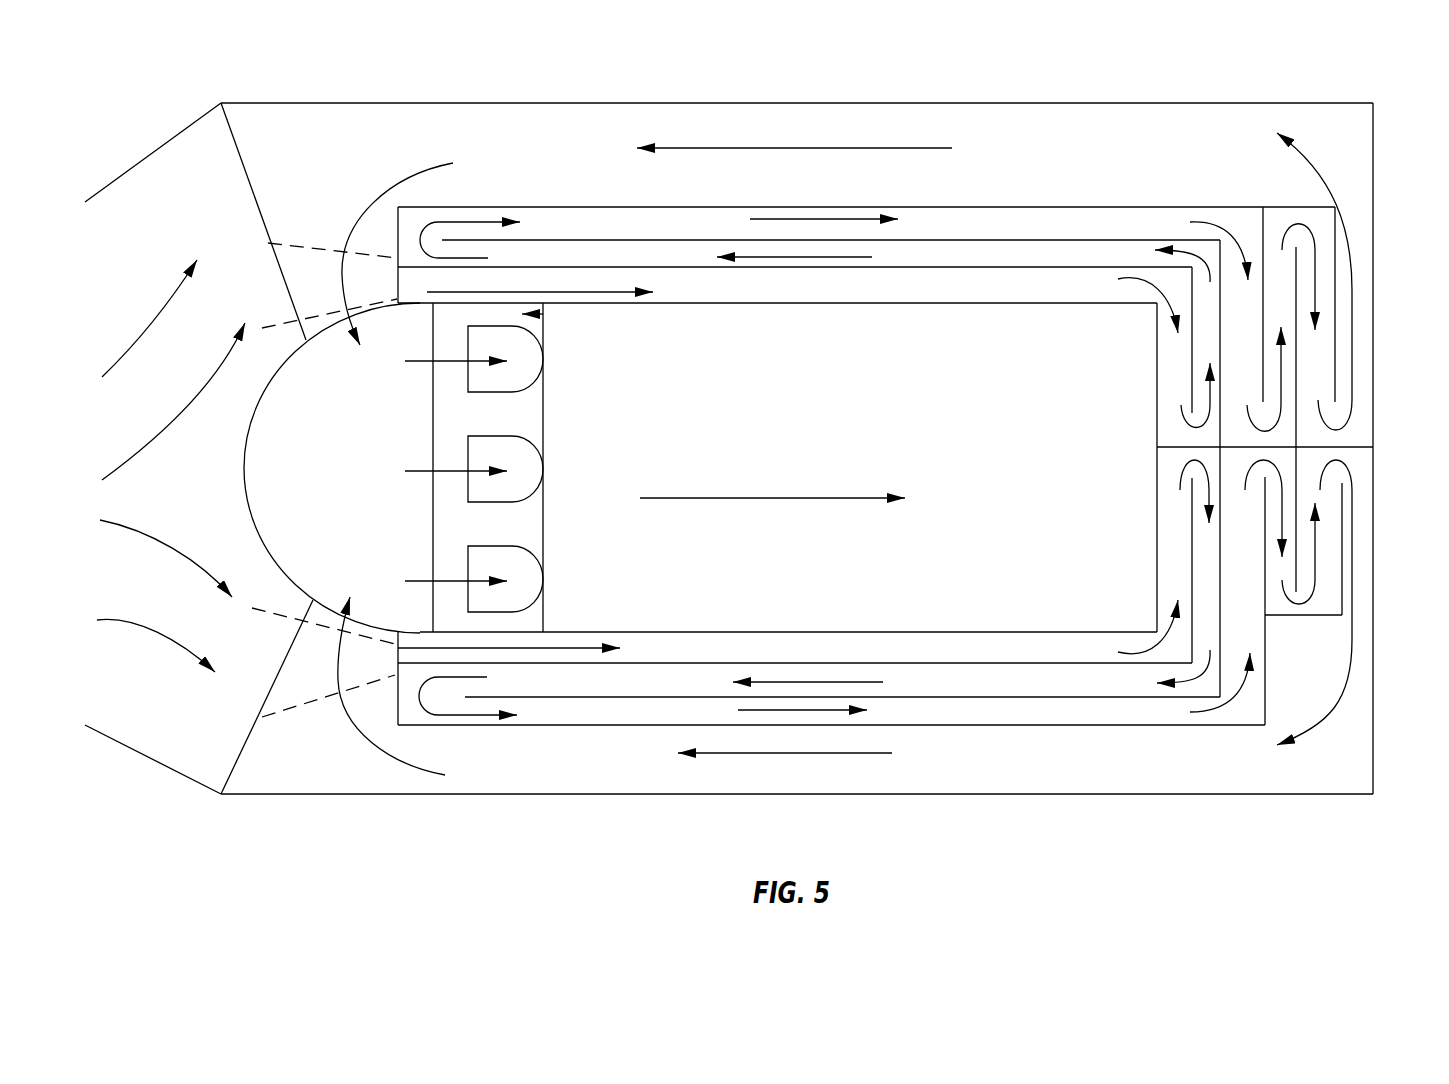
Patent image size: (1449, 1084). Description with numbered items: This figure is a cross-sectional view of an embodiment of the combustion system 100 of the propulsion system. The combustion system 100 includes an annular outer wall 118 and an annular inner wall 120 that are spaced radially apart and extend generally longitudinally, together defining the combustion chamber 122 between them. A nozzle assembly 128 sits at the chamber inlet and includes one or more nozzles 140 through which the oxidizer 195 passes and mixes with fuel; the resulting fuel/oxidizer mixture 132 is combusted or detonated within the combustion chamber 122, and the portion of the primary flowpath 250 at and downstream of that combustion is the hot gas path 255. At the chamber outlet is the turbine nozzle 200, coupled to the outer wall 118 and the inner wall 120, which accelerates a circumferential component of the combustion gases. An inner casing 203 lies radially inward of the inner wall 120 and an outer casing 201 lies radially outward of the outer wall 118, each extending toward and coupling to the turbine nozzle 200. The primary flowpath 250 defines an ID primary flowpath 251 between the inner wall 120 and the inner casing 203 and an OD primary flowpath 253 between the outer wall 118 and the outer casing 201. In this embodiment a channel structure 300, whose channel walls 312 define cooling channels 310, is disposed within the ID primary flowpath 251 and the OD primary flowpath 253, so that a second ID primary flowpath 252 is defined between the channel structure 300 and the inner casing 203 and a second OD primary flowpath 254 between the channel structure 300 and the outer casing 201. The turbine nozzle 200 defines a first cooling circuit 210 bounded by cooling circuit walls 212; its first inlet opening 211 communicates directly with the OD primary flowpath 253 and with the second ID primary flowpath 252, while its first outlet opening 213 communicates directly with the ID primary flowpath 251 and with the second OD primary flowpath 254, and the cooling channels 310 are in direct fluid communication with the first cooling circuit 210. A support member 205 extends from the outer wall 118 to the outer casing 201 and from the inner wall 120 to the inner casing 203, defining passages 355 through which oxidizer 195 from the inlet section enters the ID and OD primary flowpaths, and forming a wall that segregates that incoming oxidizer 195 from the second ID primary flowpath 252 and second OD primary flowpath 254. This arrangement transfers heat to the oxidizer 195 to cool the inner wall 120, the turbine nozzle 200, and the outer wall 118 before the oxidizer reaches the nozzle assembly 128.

The combustion system 100 is at (625, 902).
The outer wall 118 is at (832, 305).
The inner wall 120 is at (805, 632).
The combustion chamber 122 is at (750, 425).
The nozzle assembly 128 is at (545, 314).
The fuel/oxidizer mixture 132 is at (788, 498).
The nozzle 140 is at (545, 363).
The oxidizer 195 is at (145, 335).
The turbine nozzle 200 is at (1377, 428).
The outer casing 201 is at (1052, 103).
The inner casing 203 is at (967, 797).
The support member 205 is at (240, 146).
The first cooling circuit 210 is at (1165, 397).
The first inlet opening 211 is at (1158, 302).
The cooling circuit wall 212 is at (1275, 228).
The first outlet opening 213 is at (1357, 207).
The primary flowpath 250 is at (350, 490).
The ID primary flowpath 251 is at (927, 665).
The second ID primary flowpath 252 is at (980, 770).
The OD primary flowpath 253 is at (968, 302).
The second OD primary flowpath 254 is at (1022, 163).
The hot gas path 255 is at (1097, 465).
The channel structure 300 is at (1033, 192).
The cooling channel 310 is at (1010, 237).
The channel wall 312 is at (1082, 240).
The passage 355 is at (303, 242).